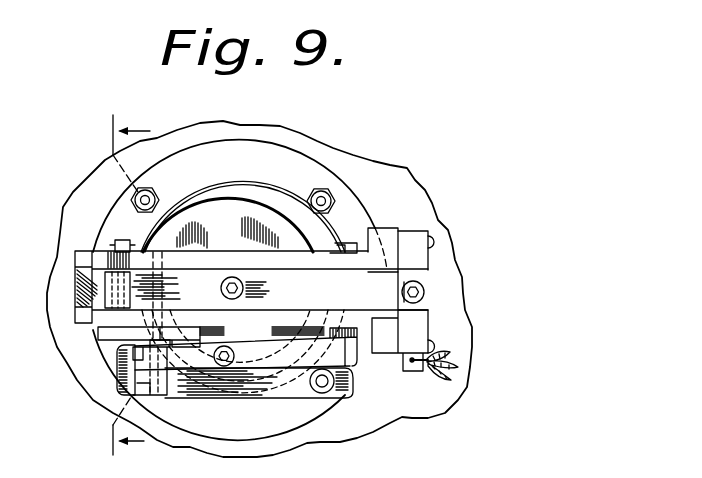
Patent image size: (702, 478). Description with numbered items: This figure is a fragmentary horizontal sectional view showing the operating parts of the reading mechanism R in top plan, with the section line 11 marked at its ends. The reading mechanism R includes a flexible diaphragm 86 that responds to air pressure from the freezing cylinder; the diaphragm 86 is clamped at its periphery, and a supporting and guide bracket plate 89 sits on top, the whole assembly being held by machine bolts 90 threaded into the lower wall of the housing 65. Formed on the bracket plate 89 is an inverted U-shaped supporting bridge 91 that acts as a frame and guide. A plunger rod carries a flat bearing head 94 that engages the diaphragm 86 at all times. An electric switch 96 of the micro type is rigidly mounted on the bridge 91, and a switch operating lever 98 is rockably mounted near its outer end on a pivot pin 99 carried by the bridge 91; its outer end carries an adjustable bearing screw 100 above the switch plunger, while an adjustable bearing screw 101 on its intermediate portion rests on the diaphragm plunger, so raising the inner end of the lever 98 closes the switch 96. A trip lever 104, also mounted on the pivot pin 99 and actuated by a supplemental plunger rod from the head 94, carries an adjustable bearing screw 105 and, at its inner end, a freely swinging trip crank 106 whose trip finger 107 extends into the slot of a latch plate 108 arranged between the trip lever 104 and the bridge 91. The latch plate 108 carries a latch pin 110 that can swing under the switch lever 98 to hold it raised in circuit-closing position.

The reading mechanism R is at (352, 209).
The section line 11 is at (122, 285).
The housing 65 is at (405, 403).
The flexible diaphragm 86 is at (272, 210).
The supporting and guide bracket plate 89 is at (236, 423).
The machine bolts 90 is at (145, 200).
The supporting bridge 91 is at (377, 238).
The bearing head 94 is at (226, 220).
The electric switch 96 is at (413, 256).
The switch operating lever 98 is at (422, 305).
The pivot pin 99 is at (357, 228).
The adjustable bearing screw 100 is at (420, 282).
The adjustable bearing screw 101 is at (228, 286).
The trip lever 104 is at (200, 367).
The adjustable bearing screw 105 is at (234, 352).
The trip crank 106 is at (132, 395).
The trip finger 107 is at (167, 339).
The latch plate 108 is at (168, 330).
The latch pin 110 is at (122, 240).